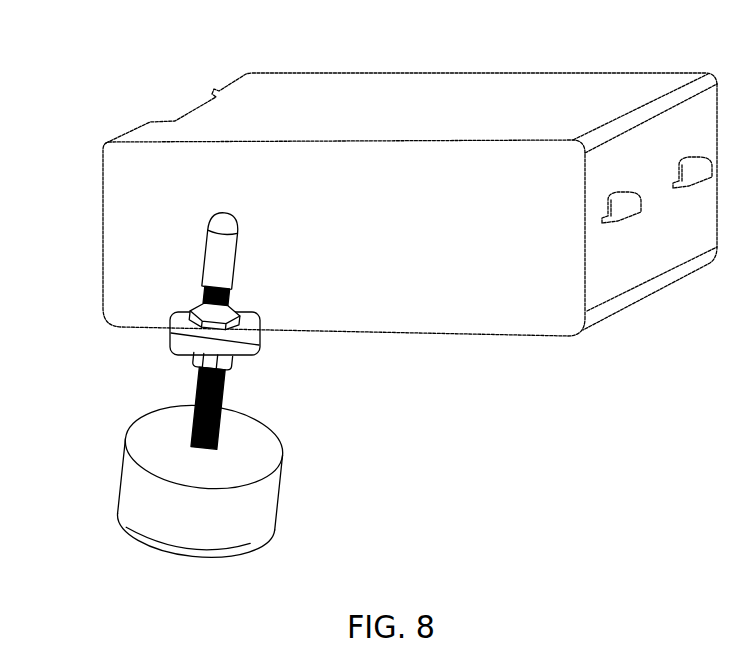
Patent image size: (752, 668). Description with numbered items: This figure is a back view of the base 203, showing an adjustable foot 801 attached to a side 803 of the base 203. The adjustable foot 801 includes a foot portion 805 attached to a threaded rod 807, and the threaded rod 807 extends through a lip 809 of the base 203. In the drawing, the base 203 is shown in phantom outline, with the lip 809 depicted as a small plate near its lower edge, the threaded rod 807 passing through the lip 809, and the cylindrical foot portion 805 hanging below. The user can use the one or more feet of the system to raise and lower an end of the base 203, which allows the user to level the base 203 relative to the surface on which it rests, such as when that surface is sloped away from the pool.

The base 203 is at (598, 57).
The adjustable foot 801 is at (88, 416).
The side 803 is at (118, 197).
The foot portion 805 is at (281, 488).
The threaded rod 807 is at (224, 396).
The lip 809 is at (258, 344).